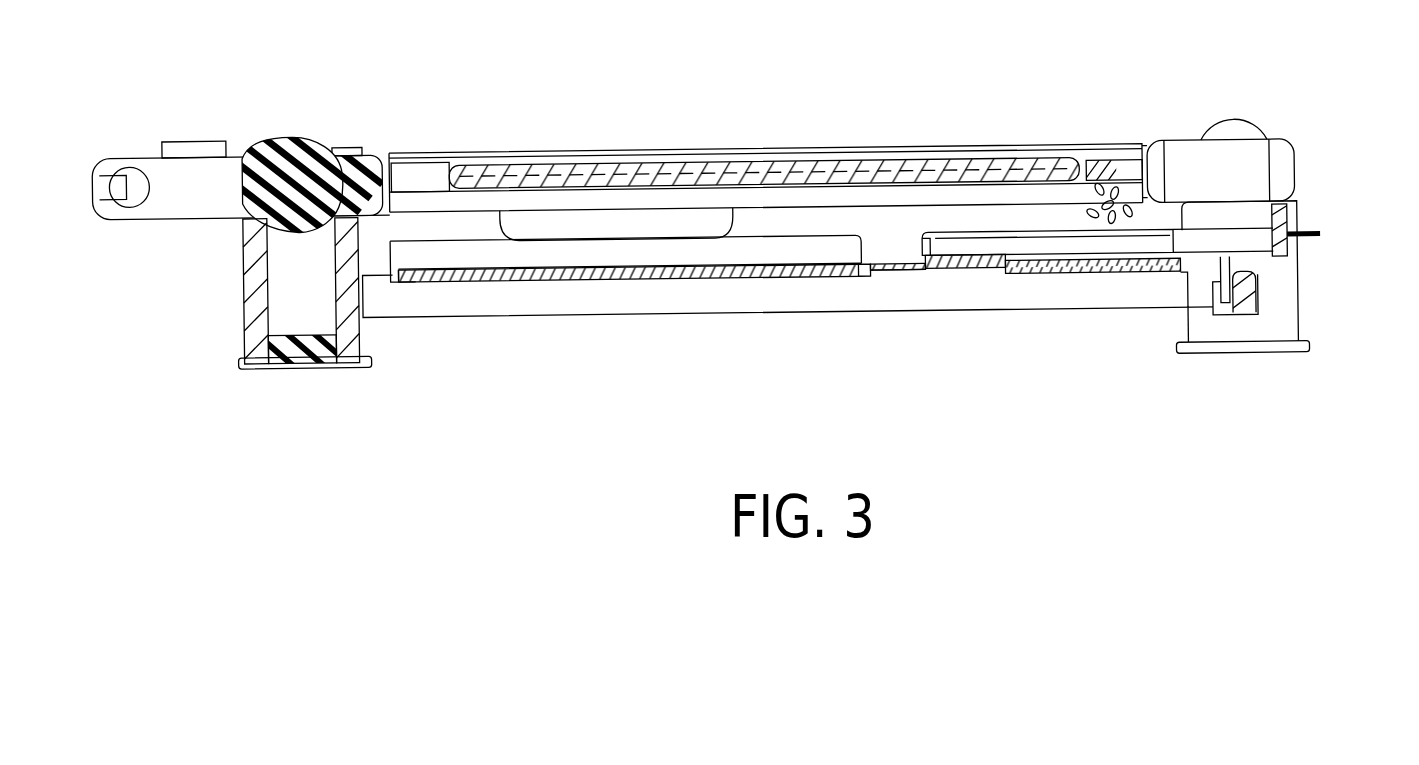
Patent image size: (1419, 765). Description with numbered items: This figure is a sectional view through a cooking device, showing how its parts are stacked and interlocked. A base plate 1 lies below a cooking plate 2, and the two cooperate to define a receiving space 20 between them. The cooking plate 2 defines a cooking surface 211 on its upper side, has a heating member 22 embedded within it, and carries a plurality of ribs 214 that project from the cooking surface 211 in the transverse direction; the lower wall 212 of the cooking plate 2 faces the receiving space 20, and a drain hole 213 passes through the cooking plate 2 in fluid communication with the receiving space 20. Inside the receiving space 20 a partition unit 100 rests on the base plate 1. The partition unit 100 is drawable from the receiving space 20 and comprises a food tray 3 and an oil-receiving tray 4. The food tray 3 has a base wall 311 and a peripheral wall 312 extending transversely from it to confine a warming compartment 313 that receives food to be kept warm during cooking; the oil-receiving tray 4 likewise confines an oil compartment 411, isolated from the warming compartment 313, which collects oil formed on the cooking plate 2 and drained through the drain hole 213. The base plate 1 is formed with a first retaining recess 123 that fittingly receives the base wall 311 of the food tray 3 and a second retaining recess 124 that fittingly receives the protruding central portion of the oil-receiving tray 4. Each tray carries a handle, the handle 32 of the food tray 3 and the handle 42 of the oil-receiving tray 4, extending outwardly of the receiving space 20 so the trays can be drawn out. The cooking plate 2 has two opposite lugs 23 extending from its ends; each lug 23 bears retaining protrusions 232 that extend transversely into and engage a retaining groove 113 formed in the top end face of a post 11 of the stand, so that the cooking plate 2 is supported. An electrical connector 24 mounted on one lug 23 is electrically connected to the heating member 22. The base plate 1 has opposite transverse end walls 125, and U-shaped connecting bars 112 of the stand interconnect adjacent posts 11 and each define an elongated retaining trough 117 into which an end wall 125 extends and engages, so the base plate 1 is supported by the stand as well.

The base plate 1 is at (727, 320).
The cooking plate 2 is at (791, 148).
The food tray 3 is at (845, 236).
The oil-receiving tray 4 is at (933, 232).
The posts 11 is at (243, 335).
The receiving space 20 is at (893, 240).
The heating member 22 is at (710, 165).
The lugs 23 is at (348, 180).
The electrical connector 24 is at (162, 167).
The handle 32 is at (603, 220).
The handle 42 is at (1305, 234).
The partition unit 100 is at (918, 70).
The U-shaped connecting bars 112 is at (1267, 322).
The retaining groove 113 is at (323, 232).
The retaining trough 117 is at (1233, 287).
The first retaining recess 123 is at (832, 277).
The second retaining recess 124 is at (1077, 276).
The end walls 125 is at (1217, 273).
The cooking surface 211 is at (422, 178).
The bottom wall 212 is at (560, 195).
The drain hole 213 is at (1110, 180).
The ribs 214 is at (1013, 165).
The retaining protrusions 232 is at (298, 150).
The base wall 311 is at (470, 276).
The peripheral wall 312 is at (400, 250).
The warming compartment 313 is at (603, 258).
The oil compartment 411 is at (1062, 240).